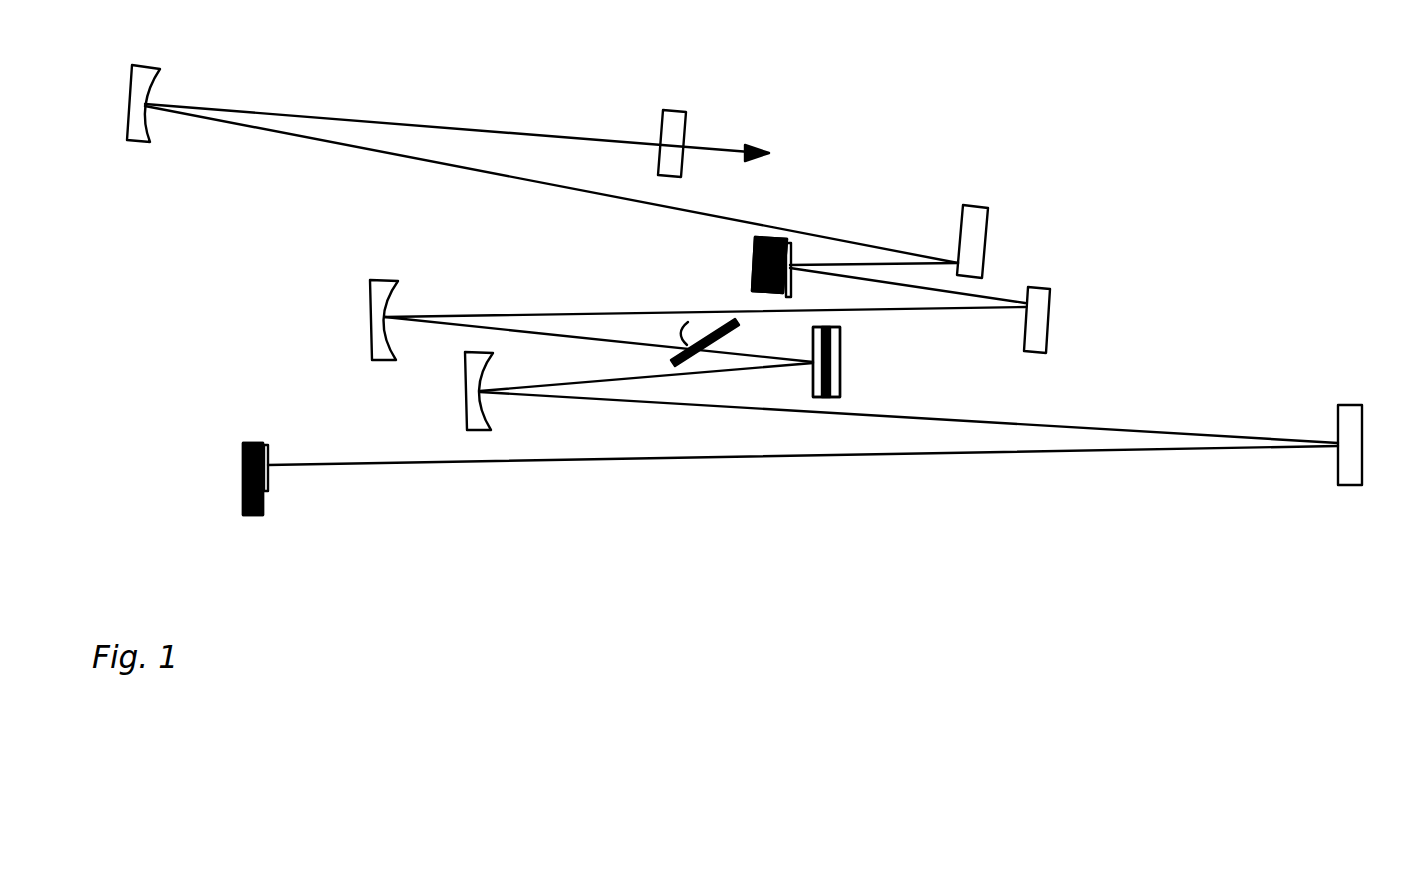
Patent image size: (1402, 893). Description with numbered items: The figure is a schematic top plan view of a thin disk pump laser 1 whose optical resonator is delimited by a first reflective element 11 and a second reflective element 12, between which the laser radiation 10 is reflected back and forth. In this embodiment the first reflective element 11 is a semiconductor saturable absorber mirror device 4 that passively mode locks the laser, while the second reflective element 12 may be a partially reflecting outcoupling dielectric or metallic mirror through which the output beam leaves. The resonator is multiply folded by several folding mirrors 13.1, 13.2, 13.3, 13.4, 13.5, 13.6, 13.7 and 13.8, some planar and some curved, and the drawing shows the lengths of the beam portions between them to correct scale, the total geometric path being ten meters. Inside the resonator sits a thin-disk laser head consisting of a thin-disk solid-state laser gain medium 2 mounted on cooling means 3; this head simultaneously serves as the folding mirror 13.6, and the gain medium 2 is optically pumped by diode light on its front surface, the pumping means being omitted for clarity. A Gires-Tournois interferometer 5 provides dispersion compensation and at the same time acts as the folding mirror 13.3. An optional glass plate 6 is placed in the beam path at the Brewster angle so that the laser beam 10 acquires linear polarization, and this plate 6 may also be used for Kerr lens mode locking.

The laser 1 is at (892, 166).
The thin-disk solid-state laser gain medium 2 is at (791, 250).
The cooling means 3 is at (752, 248).
The semiconductor saturable absorber mirror device 4 is at (267, 470).
The Gires-Tournois interferometer 5 is at (843, 347).
The glass plate 6 is at (724, 336).
The laser radiation 10 is at (733, 457).
The first reflective element 11 is at (226, 449).
The second reflective element 12 is at (676, 112).
The folding mirror 13.1 is at (1350, 475).
The folding mirror 13.2 is at (468, 418).
The folding mirror 13.3 is at (858, 379).
The folding mirror 13.4 is at (372, 348).
The folding mirror 13.5 is at (1038, 335).
The folding mirror 13.6 is at (736, 268).
The folding mirror 13.7 is at (980, 215).
The folding mirror 13.8 is at (135, 141).